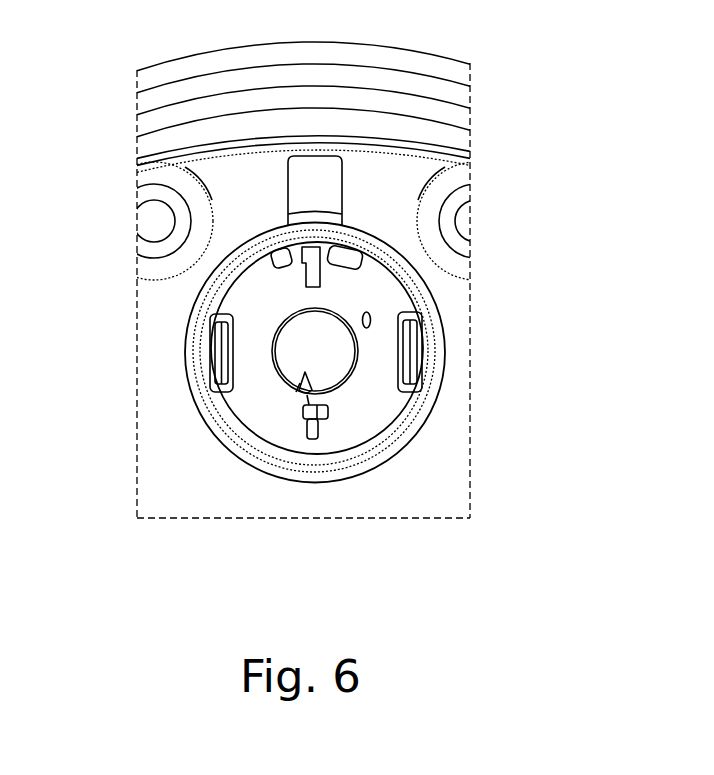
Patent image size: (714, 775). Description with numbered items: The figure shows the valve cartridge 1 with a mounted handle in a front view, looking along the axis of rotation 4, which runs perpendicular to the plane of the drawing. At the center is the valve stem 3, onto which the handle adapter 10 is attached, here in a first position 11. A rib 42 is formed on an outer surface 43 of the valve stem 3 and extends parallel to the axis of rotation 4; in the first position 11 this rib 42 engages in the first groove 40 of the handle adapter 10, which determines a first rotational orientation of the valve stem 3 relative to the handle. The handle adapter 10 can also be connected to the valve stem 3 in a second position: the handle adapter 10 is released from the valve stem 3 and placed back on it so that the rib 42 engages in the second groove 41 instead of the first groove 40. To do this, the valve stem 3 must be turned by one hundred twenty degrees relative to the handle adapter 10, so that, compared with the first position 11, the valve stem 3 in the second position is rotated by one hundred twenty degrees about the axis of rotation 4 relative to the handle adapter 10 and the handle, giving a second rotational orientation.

The valve cartridge 1 is at (501, 153).
The valve stem 3 is at (293, 338).
The axis of rotation 4 is at (343, 352).
The handle adapter 10 is at (362, 430).
The first position 11 is at (283, 492).
The first groove 40 is at (330, 411).
The second groove 41 is at (350, 328).
The rib 42 is at (306, 393).
The outer surface 43 is at (292, 378).